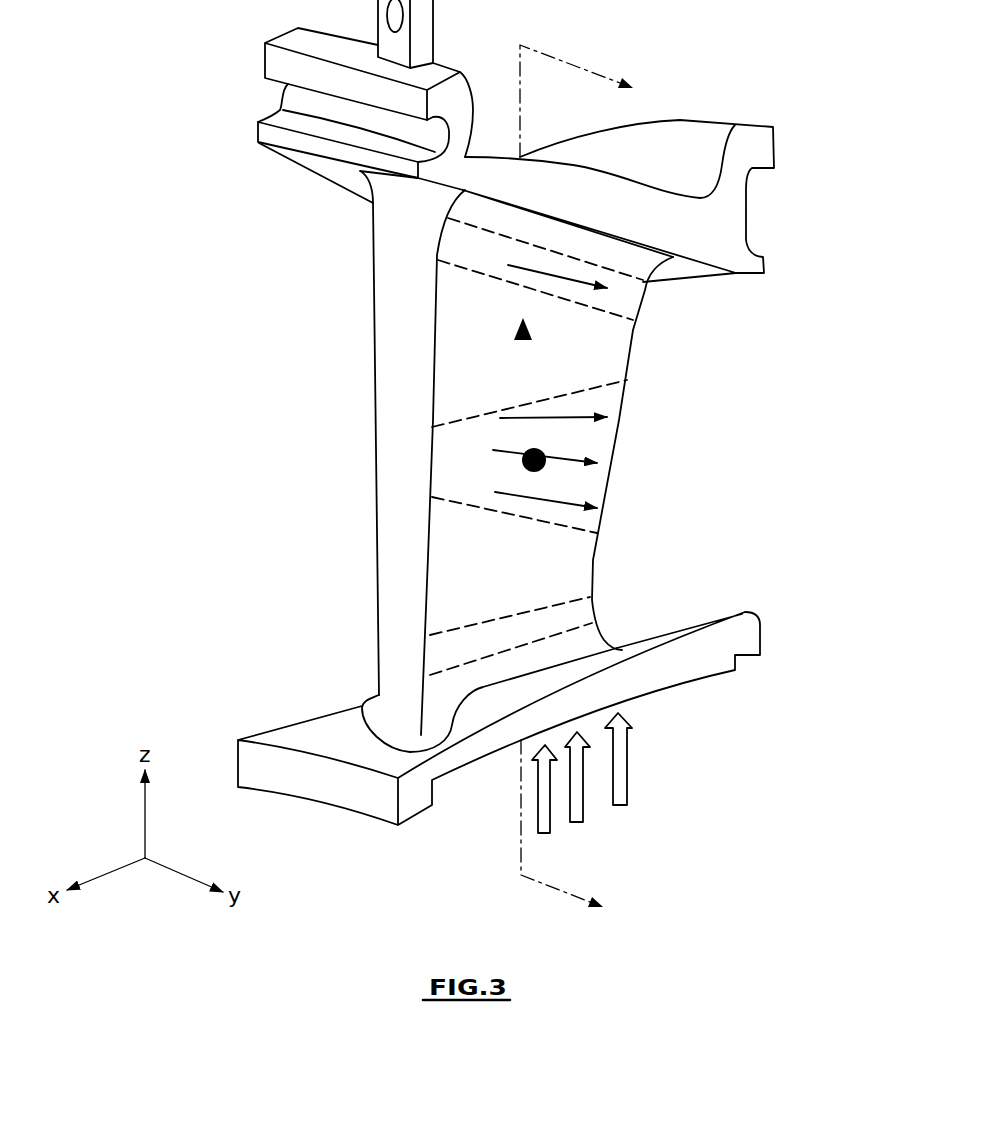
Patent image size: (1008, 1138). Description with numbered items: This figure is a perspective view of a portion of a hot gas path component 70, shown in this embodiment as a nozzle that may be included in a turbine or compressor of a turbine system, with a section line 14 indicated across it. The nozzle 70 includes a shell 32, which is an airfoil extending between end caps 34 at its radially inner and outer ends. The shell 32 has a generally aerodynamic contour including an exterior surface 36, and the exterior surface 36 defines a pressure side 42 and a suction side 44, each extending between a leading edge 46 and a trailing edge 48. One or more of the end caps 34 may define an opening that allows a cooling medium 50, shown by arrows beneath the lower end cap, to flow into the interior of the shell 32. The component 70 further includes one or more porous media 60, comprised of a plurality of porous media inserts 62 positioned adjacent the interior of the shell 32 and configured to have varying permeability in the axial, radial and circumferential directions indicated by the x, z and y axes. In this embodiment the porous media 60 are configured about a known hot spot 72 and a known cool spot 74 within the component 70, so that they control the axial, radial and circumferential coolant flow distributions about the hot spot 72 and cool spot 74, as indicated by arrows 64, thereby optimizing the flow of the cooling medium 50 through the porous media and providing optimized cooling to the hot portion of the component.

The hot gas path component 70 is at (128, 63).
The section line 14 is at (585, 476).
The end caps 34 is at (787, 211).
The shell 32 is at (375, 473).
The suction side 44 is at (383, 567).
The leading edge 46 is at (432, 515).
The trailing edge 48 is at (617, 433).
The porous media 60 is at (440, 241).
The known hot spot 72 is at (512, 327).
The exterior surface 36 is at (628, 381).
The porous media inserts 62 is at (610, 403).
The known cool spot 74 is at (533, 472).
The arrows 64 is at (555, 492).
The pressure side 42 is at (600, 532).
The cooling medium 50 is at (618, 778).